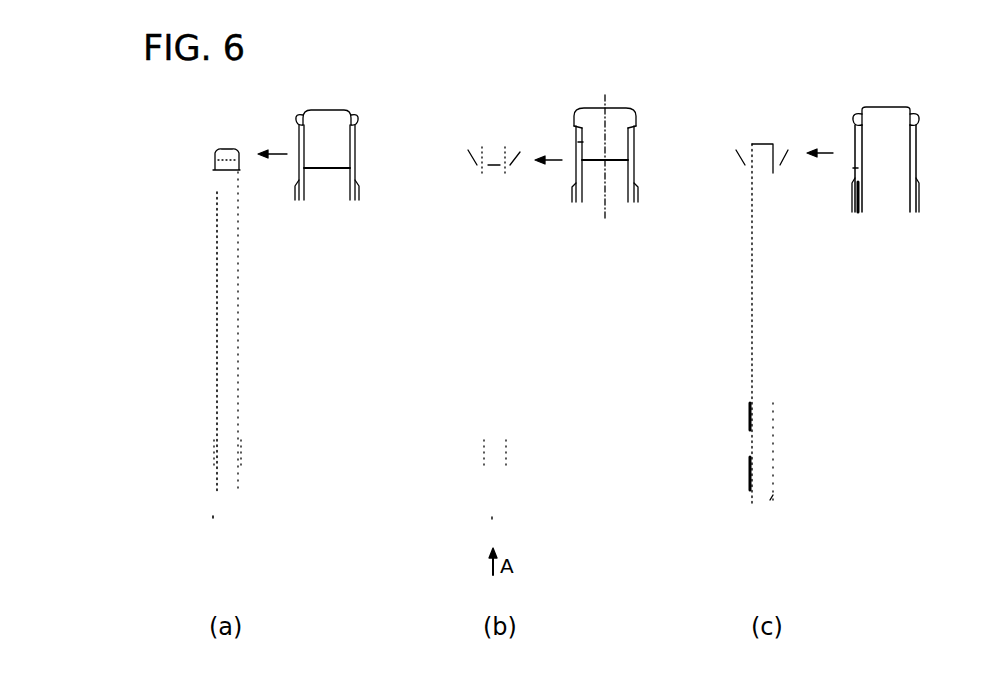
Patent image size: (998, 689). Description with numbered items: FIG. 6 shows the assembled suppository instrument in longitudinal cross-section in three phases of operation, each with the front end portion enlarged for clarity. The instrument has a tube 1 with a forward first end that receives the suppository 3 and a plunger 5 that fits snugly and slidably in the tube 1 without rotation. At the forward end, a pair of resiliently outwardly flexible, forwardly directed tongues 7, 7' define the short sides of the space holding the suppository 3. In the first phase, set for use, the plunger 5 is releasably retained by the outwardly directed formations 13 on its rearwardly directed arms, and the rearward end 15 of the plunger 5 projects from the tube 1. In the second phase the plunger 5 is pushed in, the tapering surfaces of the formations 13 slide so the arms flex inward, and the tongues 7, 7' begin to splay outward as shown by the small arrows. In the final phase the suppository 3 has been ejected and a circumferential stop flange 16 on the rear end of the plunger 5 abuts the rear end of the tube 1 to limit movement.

The tube 1 is at (212, 302).
The suppository 3 is at (226, 152).
The plunger 5 is at (227, 312).
The tongue 7 is at (632, 156).
The tongue 7' is at (696, 161).
The outwardly directed formations 13 is at (215, 457).
The rearward end of the plunger 15 is at (250, 509).
The circumferential stop flange 16 is at (505, 518).